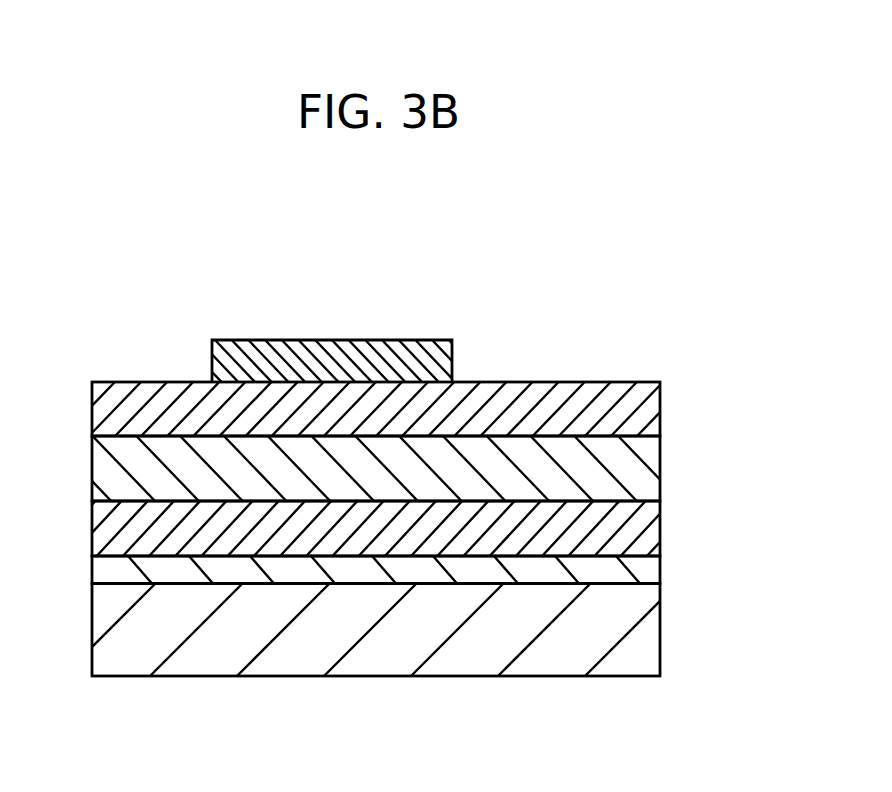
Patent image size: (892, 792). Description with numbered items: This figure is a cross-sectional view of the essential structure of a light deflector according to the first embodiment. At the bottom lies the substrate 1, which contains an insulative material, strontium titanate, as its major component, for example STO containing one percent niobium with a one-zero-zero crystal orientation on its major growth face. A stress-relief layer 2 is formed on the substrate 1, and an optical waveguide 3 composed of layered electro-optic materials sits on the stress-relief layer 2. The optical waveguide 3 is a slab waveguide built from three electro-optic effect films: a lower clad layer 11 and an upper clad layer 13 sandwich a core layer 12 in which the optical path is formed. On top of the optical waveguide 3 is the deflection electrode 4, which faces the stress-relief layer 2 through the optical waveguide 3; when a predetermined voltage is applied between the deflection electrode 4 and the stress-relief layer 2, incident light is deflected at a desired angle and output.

The substrate 1 is at (638, 633).
The stress-relief layer 2 is at (638, 573).
The optical waveguide 3 is at (371, 379).
The deflection electrode 4 is at (345, 357).
The lower clad layer 11 is at (585, 520).
The core layer 12 is at (545, 468).
The upper clad layer 13 is at (485, 408).